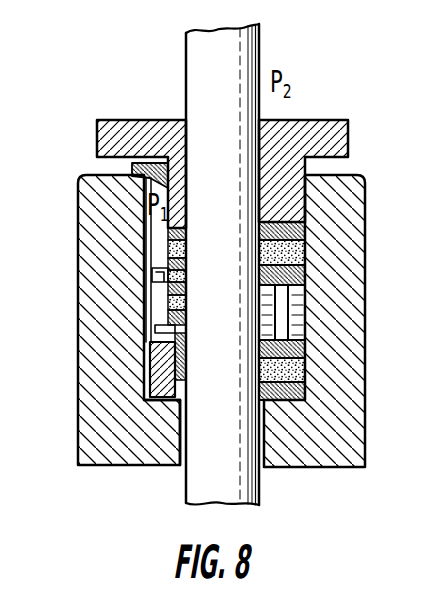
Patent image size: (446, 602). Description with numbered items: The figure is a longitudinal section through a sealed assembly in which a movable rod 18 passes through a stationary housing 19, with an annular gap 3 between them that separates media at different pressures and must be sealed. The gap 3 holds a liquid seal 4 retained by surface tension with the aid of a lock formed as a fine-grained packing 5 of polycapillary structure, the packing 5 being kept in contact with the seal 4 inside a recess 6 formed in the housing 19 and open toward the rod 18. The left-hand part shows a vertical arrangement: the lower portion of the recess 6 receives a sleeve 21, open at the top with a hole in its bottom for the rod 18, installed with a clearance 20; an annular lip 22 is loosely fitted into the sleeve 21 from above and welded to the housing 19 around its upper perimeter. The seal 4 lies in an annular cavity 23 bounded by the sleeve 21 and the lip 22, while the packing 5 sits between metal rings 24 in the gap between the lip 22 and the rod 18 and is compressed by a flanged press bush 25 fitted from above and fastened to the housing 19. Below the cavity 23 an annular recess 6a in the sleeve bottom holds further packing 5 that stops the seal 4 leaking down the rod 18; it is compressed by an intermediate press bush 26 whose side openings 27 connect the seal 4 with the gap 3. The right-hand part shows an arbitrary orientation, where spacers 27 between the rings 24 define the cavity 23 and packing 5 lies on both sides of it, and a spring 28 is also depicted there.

The annular gap 3 is at (182, 468).
The liquid seal 4 is at (186, 303).
The fine-grained packing 5 is at (304, 258).
The recess 6 is at (148, 256).
The annular recess 6a is at (143, 394).
The rod 18 is at (207, 95).
The housing 19 is at (96, 204).
The clearance 20 is at (150, 300).
The sleeve 21 is at (143, 362).
The annular lip 22 is at (169, 166).
The annular cavity 23 is at (187, 273).
The metal rings 24 is at (304, 232).
The flanged press bush 25 is at (336, 143).
The intermediate press bush 26 is at (186, 357).
The side openings 27 is at (174, 332).
The spring 28 is at (300, 303).